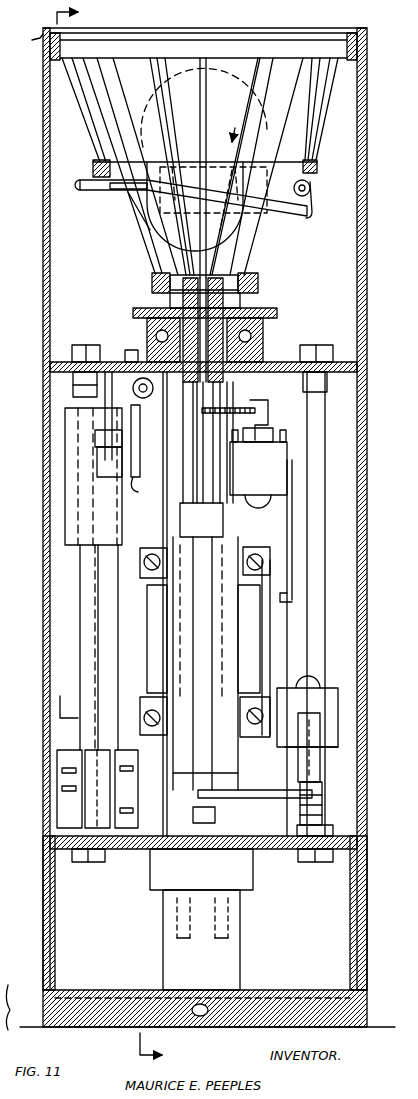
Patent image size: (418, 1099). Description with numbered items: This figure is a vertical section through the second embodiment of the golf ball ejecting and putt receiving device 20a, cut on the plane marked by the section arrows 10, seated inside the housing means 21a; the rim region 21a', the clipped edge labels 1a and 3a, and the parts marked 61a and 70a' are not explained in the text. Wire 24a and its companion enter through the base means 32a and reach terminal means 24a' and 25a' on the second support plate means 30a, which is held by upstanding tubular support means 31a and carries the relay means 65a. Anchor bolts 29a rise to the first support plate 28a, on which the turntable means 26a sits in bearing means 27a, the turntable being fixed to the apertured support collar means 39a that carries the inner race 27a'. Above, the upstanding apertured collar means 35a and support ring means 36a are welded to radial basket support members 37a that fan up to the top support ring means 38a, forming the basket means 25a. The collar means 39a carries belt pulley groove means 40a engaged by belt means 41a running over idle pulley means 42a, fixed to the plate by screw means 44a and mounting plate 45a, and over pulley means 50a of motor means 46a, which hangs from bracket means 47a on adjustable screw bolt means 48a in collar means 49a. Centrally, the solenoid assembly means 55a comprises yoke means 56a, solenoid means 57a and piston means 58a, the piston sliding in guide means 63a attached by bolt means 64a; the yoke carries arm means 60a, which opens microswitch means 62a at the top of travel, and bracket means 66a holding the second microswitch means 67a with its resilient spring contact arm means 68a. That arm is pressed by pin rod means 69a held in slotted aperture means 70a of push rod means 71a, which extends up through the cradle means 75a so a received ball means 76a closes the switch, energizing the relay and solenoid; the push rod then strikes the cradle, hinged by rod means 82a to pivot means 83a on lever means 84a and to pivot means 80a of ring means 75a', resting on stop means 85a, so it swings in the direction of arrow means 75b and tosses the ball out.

The section line 10 is at (126, 535).
The housing means 21a is at (218, 509).
The housing top 21a' is at (21, 42).
The unit 1a is at (10, 75).
The top support ring means 38a is at (120, 48).
The radial basket support members 37a is at (195, 98).
The ball means 76a is at (246, 166).
The cradle means 75a is at (273, 166).
The arrow means 75b is at (224, 128).
The basket means 25a is at (351, 109).
The ring means 75a' is at (324, 155).
The pin rod means 69a is at (200, 158).
The slotted aperture means 70a is at (258, 216).
The rod means 82a is at (72, 178).
The stop means 85a is at (82, 186).
The pivot means 83a is at (128, 190).
The lever means 84a is at (148, 218).
The pivot means 80a is at (312, 184).
The golf ball ejecting and putt receiving device 20a is at (128, 262).
The push rod means 71a is at (192, 236).
The upstanding apertured collar means 35a is at (150, 268).
The turntable means 26a is at (260, 276).
The support ring means 36a is at (150, 288).
The bearing means 27a is at (225, 313).
The inner race 27a' is at (170, 335).
The apertured support collar means 39a is at (240, 376).
The first support plate 28a is at (285, 352).
The screw means 44a is at (97, 342).
The mounting plate 45a is at (130, 350).
The collar means 49a is at (73, 384).
The adjustable screw bolt means 48a is at (66, 428).
The bracket means 47a is at (106, 470).
The anchor bolts 29a is at (82, 625).
The relay means 65a is at (62, 760).
The idle pulley means 42a is at (150, 604).
The belt means 41a is at (148, 441).
The pulley means 50a is at (142, 488).
The motor means 46a is at (64, 558).
The belt pulley groove means 40a is at (221, 442).
The resilient spring contact arm means 68a is at (247, 403).
The second microswitch means 67a is at (268, 412).
The motor box 70a' is at (247, 461).
The piston means 58a is at (244, 746).
The bracket means 66a is at (300, 520).
The guide means 63a is at (165, 746).
The bolt means 64a is at (146, 550).
The solenoid means 57a is at (146, 607).
The yoke means 56a is at (198, 638).
The solenoid assembly means 55a is at (262, 640).
The arm means 60a is at (256, 788).
The microswitch means 62a is at (336, 688).
The switch stem 61a is at (318, 780).
The second support plate means 30a is at (336, 830).
The upstanding tubular support means 31a is at (350, 888).
The terminal means 24a' is at (179, 940).
The terminal means 25a' is at (250, 918).
The base means 32a is at (304, 990).
The unit 3a is at (8, 935).
The wire 24a is at (12, 993).